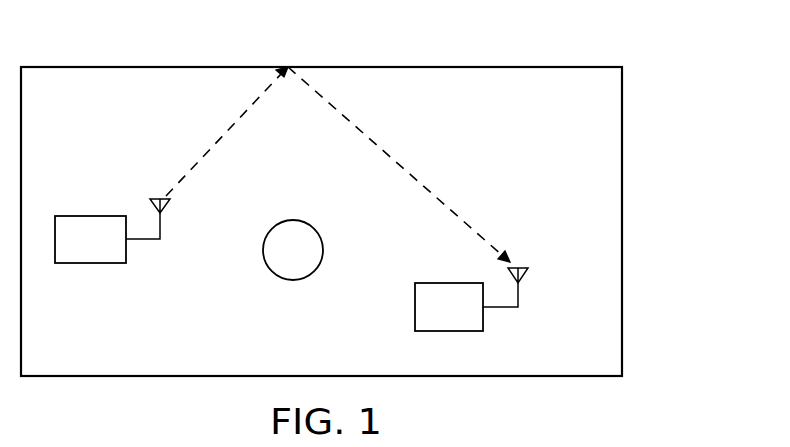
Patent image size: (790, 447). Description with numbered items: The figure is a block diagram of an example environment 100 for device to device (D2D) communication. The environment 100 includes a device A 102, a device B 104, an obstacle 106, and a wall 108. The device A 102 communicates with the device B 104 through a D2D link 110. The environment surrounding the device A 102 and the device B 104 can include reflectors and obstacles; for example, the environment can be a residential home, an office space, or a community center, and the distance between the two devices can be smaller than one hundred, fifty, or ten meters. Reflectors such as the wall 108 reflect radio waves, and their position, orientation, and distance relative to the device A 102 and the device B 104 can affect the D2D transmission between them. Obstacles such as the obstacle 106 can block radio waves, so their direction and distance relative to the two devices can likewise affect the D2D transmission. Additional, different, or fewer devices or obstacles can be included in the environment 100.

The example environment 100 is at (660, 148).
The device A 102 is at (90, 216).
The device B 104 is at (415, 318).
The obstacle 106 is at (282, 279).
The wall 108 is at (334, 67).
The D2D link 110 is at (413, 175).